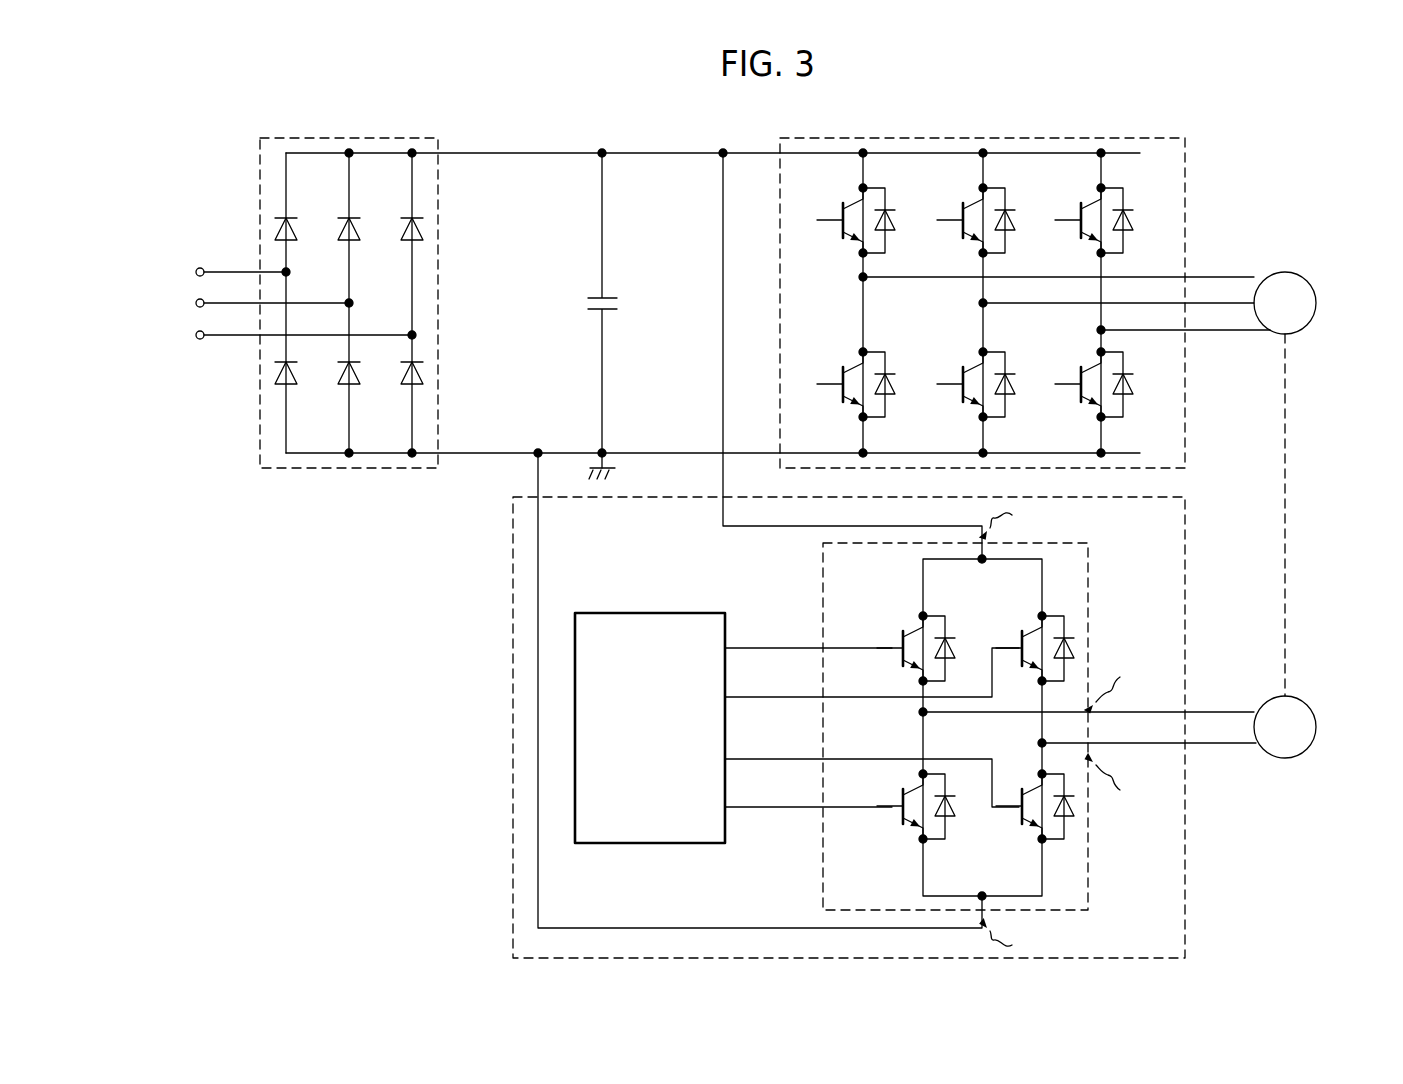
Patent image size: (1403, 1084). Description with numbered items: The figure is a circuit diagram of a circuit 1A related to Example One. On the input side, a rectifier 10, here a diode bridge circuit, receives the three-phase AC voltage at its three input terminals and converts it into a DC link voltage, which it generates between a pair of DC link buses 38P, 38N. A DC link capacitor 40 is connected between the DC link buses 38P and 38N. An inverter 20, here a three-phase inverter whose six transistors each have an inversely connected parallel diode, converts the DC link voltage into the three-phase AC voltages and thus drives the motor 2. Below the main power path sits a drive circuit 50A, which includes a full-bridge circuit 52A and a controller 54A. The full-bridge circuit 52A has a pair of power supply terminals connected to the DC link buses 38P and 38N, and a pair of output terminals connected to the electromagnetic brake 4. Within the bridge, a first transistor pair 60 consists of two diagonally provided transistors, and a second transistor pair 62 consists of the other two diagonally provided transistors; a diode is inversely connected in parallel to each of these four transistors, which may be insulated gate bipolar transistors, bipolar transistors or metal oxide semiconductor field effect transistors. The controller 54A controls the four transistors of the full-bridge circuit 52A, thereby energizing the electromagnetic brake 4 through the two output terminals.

The circuit 1A is at (1316, 117).
The rectifier 10 is at (348, 137).
The DC link bus 38P is at (497, 153).
The DC link bus 38N is at (497, 453).
The DC link capacitor 40 is at (587, 305).
The inverter 20 is at (1038, 137).
The motor 2 is at (1300, 280).
The electromagnetic brake 4 is at (1300, 698).
The drive circuit 50A is at (513, 780).
The full-bridge circuit 52A is at (1090, 578).
The controller 54A is at (648, 613).
The first transistor pair 60 is at (862, 598).
The second transistor pair 62 is at (866, 873).